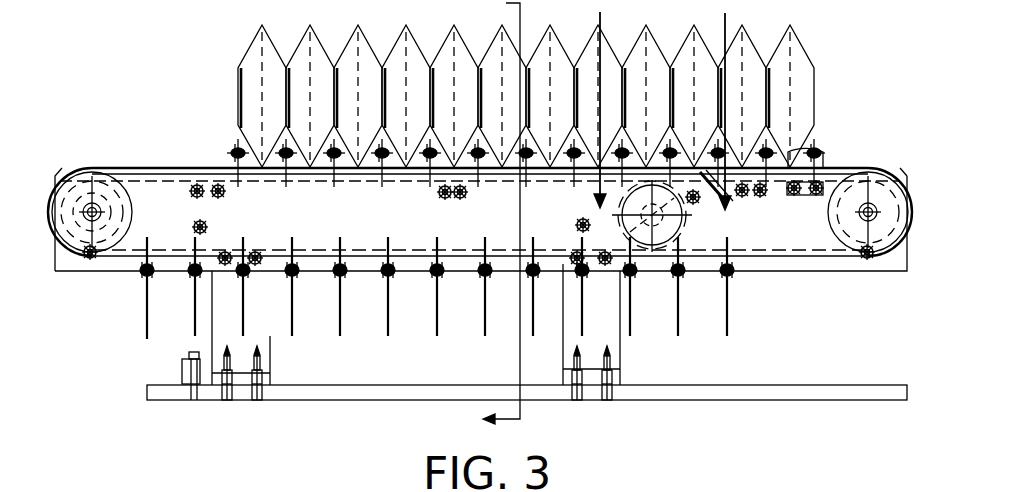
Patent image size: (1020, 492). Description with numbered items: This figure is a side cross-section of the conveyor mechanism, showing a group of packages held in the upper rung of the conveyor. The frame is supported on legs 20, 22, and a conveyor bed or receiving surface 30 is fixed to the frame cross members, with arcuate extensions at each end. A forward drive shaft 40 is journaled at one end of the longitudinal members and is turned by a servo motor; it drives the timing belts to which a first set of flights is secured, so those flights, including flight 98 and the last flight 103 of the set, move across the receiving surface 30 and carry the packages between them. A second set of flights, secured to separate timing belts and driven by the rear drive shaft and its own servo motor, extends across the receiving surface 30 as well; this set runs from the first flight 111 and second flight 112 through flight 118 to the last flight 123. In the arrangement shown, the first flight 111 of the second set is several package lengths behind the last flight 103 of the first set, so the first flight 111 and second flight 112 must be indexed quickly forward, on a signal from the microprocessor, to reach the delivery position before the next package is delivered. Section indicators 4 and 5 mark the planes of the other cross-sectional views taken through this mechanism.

The receiving surface 30 is at (168, 160).
The forward drive shaft 40 is at (92, 205).
The last flight of the first set 103 is at (238, 100).
The flight 98 is at (482, 88).
The section view 5 arrows 5 is at (663, 105).
The section line 4- 4 is at (515, 218).
The first flight of the second set 111 is at (145, 314).
The second flight of the second set 112 is at (193, 311).
The leg 20 is at (263, 338).
The flight 118 is at (482, 313).
The leg 22 is at (613, 341).
The last flight of the second set 123 is at (725, 300).